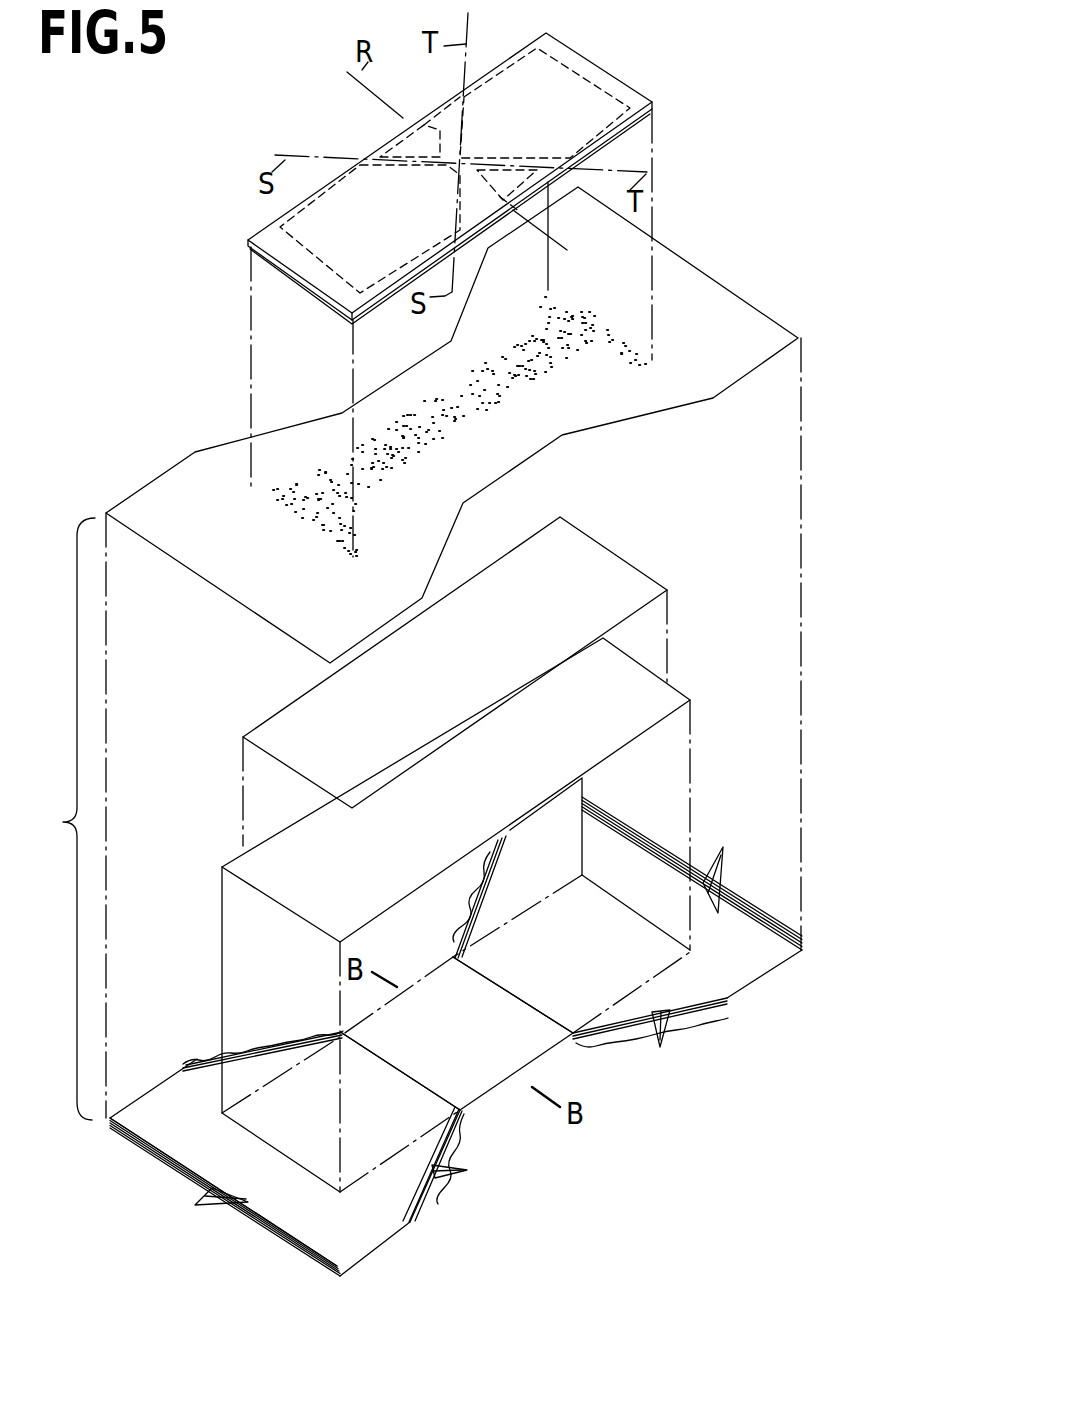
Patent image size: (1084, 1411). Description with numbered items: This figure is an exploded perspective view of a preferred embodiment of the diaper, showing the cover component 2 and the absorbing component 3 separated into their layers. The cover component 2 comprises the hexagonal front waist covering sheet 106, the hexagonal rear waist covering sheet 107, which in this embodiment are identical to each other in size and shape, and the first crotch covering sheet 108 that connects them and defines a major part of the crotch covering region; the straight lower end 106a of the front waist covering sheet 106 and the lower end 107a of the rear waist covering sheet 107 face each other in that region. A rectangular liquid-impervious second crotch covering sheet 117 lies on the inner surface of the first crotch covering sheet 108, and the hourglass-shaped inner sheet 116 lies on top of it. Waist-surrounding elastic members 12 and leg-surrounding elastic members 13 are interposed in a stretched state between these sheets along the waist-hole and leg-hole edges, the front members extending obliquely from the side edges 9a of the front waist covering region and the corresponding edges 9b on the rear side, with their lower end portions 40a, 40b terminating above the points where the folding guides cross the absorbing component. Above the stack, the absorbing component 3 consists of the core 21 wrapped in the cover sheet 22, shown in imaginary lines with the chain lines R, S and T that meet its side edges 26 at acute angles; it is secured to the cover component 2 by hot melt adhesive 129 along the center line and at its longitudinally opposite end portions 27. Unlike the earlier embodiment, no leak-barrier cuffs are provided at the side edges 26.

The cover component 2 is at (67, 819).
The absorbing component 3 is at (485, 34).
The core 21 is at (423, 289).
The cover sheet 22 is at (450, 239).
The side edges 26 is at (484, 154).
The longitudinally opposite end portions 27 is at (459, 179).
The inner sheet 116 is at (453, 652).
The hot melt adhesive 129 is at (459, 426).
The second crotch covering sheet 117 is at (469, 662).
The first crotch covering sheet 108 is at (483, 902).
The rear waist covering sheet 107 is at (660, 944).
The front waist covering sheet 106 is at (402, 1055).
The lower end of the front waist covering sheet 106a is at (403, 1069).
The lower end of the rear waist covering sheet 107a is at (513, 1009).
The side edges of the front waist covering region 9a is at (273, 1166).
The top surface of block 107 9b is at (652, 895).
The waist-surrounding elastic members 12 is at (431, 1039).
The leg-surrounding elastic members 13 is at (469, 1029).
The lower end portions of the front side leg-surrounding elastic members 40a is at (495, 1166).
The lower end portions of the rear side leg-surrounding elastic members 40b is at (650, 1061).